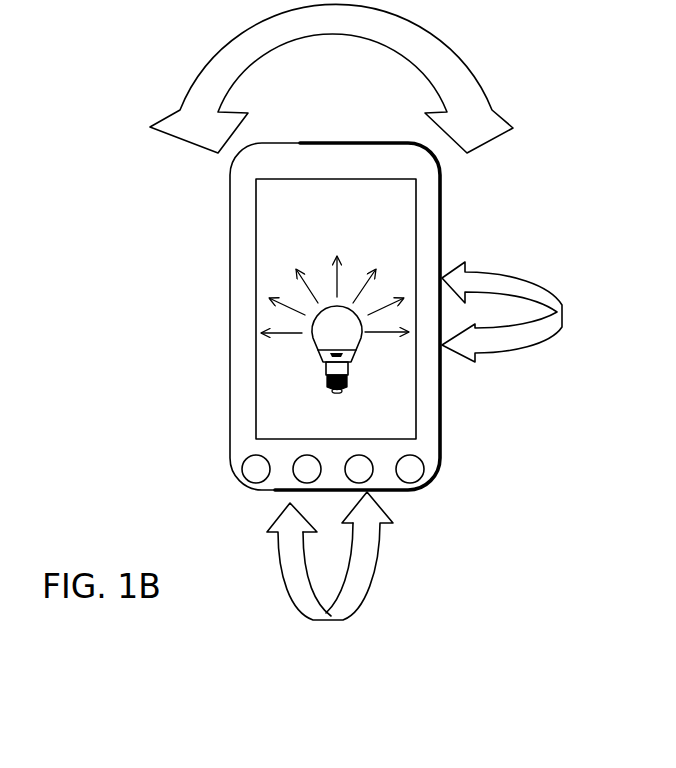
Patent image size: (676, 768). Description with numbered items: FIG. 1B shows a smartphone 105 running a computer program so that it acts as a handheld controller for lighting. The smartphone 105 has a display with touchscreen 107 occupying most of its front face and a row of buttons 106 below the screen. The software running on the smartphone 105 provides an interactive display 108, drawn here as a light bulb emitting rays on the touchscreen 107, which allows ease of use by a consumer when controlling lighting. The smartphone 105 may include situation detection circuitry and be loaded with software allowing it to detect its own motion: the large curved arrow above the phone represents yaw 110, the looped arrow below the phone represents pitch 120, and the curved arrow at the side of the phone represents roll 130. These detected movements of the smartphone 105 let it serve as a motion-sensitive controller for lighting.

The smartphone 105 is at (230, 227).
The buttons 106 is at (232, 476).
The display with touchscreen 107 is at (268, 373).
The interactive display 108 is at (272, 317).
The yaw 110 is at (155, 142).
The pitch 120 is at (284, 596).
The roll 130 is at (516, 363).